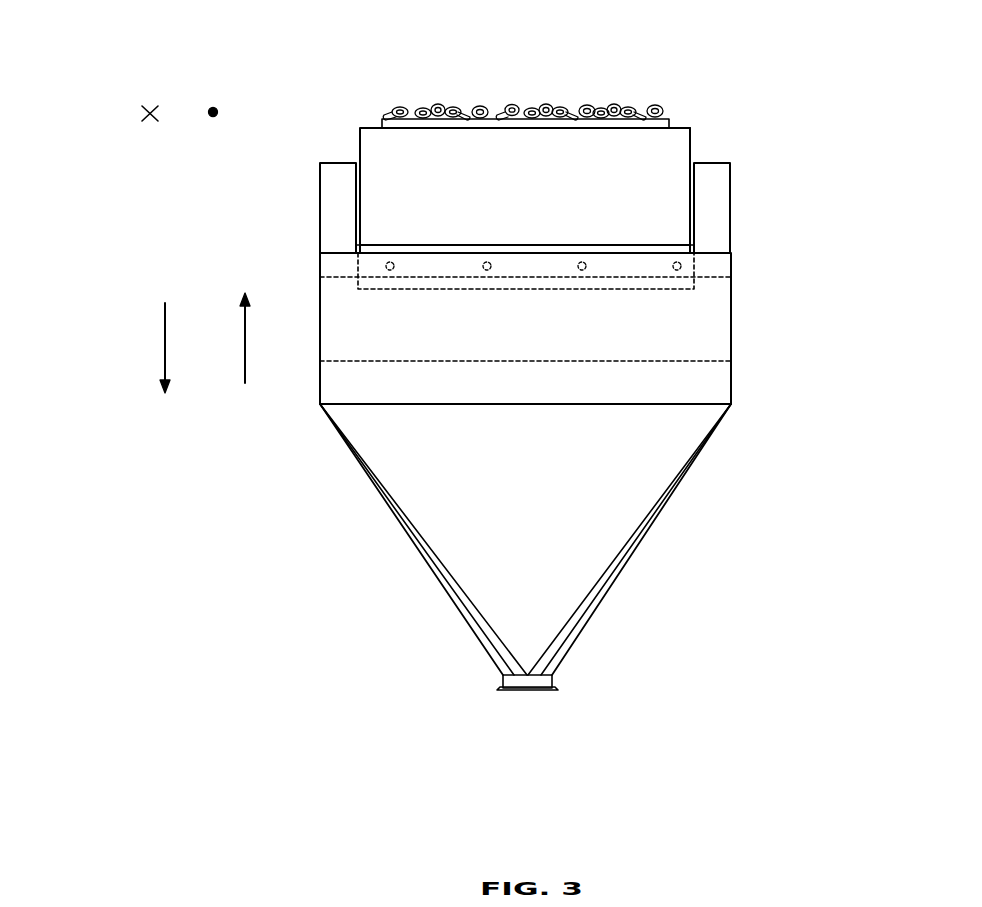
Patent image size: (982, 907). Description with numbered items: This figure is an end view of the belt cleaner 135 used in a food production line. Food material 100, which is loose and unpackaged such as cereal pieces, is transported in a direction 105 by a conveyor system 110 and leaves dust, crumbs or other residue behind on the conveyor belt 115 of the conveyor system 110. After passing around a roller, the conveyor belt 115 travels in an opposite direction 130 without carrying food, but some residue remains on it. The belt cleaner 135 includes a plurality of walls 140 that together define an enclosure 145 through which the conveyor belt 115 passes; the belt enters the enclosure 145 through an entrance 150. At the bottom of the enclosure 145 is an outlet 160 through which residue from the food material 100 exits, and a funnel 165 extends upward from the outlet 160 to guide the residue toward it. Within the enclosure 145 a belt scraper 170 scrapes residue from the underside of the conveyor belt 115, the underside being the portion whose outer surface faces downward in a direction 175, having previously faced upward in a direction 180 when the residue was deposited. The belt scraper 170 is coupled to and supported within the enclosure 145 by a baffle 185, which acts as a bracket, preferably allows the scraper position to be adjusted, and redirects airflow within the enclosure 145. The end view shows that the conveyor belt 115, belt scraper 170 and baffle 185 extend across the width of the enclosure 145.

The food material 100 is at (513, 108).
The direction 105 is at (218, 112).
The conveyor system 110 is at (664, 181).
The conveyor belt 115 is at (680, 197).
The direction 130 is at (142, 113).
The belt cleaner 135 is at (588, 539).
The walls 140 is at (731, 277).
The enclosure 145 is at (731, 313).
The entrance 150 is at (653, 253).
The outlet 160 is at (523, 681).
The funnel 165 is at (620, 495).
The belt scraper 170 is at (415, 277).
The direction 175 is at (165, 330).
The direction 180 is at (245, 359).
The baffle 185 is at (475, 361).